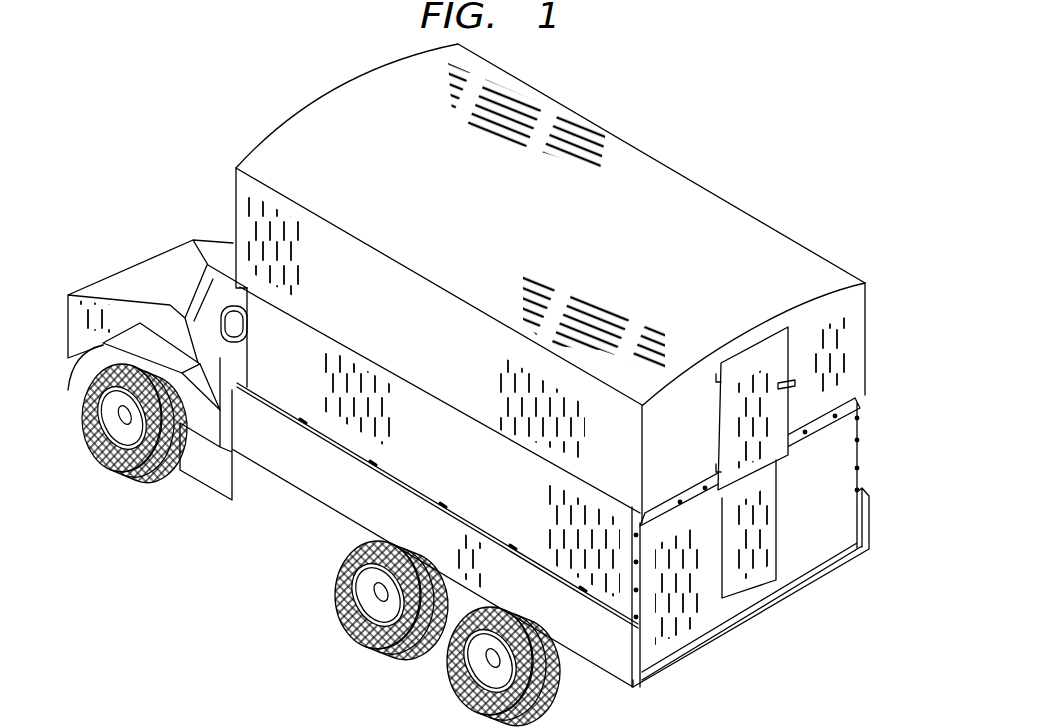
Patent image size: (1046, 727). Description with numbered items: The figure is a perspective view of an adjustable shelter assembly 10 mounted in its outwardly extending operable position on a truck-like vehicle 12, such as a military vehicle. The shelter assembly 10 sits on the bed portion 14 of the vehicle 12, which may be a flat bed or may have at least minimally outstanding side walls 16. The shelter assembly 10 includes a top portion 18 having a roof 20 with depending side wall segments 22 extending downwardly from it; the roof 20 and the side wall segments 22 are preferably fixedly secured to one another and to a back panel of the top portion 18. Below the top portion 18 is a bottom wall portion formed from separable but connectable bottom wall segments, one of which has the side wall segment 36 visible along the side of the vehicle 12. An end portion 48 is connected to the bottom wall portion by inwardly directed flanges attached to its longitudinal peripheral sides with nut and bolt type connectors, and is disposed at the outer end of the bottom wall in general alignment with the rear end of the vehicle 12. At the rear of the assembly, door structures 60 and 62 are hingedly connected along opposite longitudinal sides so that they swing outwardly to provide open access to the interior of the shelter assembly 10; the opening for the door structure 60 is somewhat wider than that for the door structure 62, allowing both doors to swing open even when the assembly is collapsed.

The adjustable shelter assembly 10 is at (740, 166).
The vehicle 12 is at (275, 505).
The bed portion 14 is at (614, 677).
The side walls 16 is at (372, 513).
The top portion 18 is at (633, 145).
The roof 20 is at (768, 243).
The side wall segments 22 is at (476, 338).
The side wall segment 36 is at (538, 486).
The end portion 48 is at (832, 455).
The door structure 60 is at (762, 528).
The door structure 62 is at (773, 370).